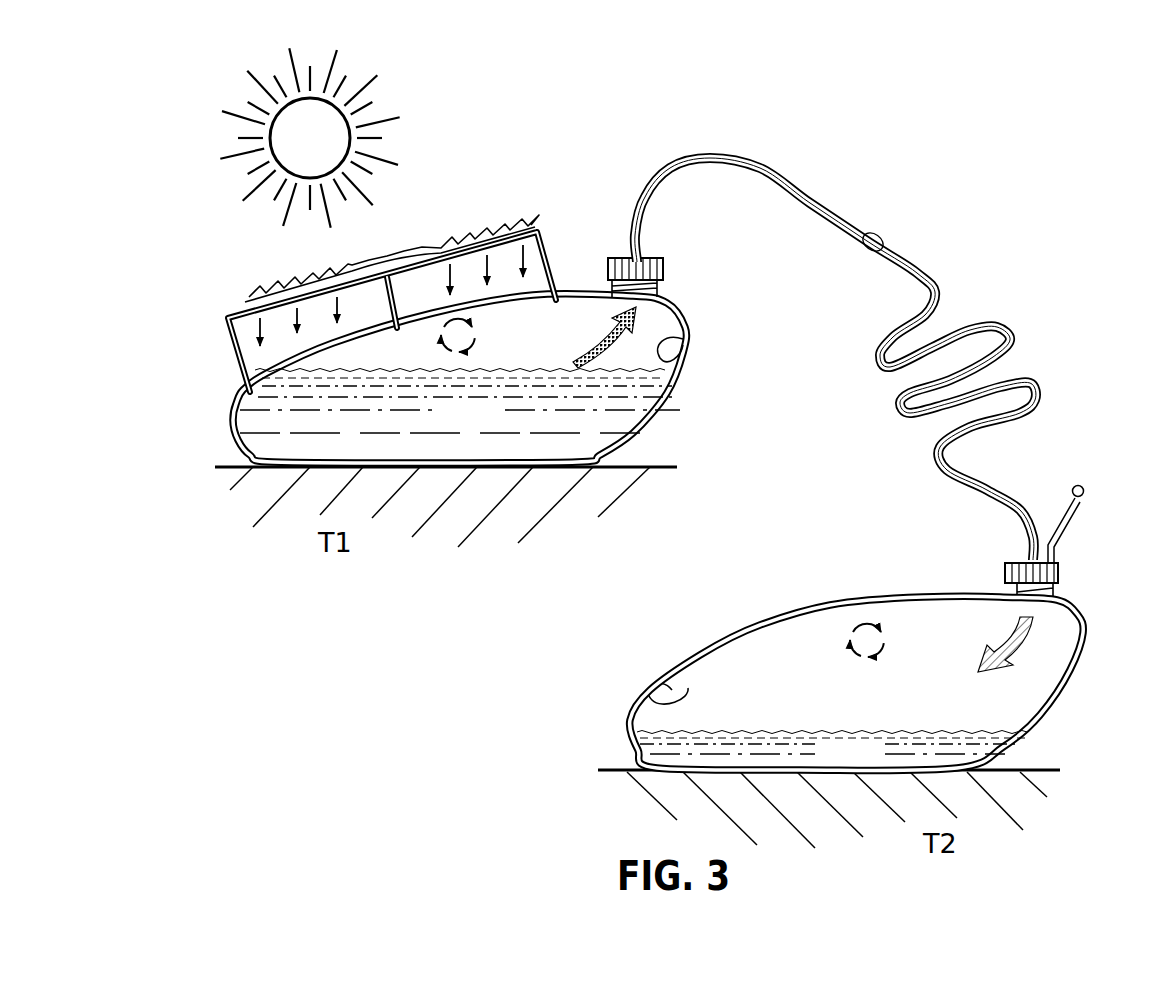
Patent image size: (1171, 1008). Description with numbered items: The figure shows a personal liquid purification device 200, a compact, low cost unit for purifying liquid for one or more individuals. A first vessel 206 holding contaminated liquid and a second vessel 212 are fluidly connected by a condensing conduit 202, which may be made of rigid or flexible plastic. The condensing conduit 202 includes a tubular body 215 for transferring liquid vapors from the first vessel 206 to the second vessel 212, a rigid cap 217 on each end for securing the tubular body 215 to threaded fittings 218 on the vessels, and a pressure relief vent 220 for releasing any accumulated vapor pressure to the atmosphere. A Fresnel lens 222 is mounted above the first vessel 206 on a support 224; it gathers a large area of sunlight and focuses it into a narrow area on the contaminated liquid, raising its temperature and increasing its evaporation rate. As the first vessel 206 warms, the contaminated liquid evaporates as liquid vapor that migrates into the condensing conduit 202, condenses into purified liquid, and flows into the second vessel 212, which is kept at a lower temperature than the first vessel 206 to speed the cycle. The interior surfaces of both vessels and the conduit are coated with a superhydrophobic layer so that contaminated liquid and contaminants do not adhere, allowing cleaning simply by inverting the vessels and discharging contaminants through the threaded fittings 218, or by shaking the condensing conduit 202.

The personal liquid purification device 200 is at (387, 709).
The condensing conduit 202 is at (879, 485).
The first vessel 206 is at (702, 421).
The second vessel 212 is at (762, 594).
The tubular body 215 is at (1003, 330).
The rigid cap 217 is at (650, 257).
The threaded fitting 218 is at (658, 293).
The pressure relief vent 220 is at (1060, 508).
The Fresnel lens 222 is at (283, 283).
The support 224 is at (537, 232).